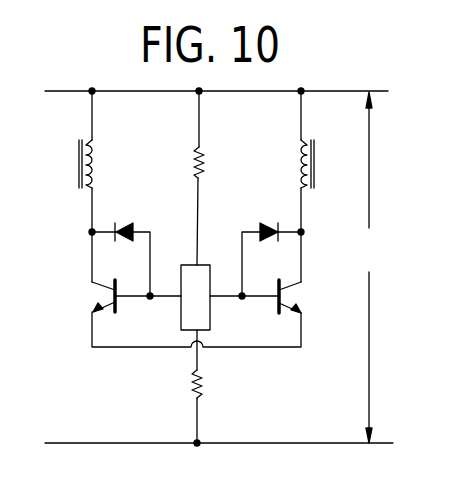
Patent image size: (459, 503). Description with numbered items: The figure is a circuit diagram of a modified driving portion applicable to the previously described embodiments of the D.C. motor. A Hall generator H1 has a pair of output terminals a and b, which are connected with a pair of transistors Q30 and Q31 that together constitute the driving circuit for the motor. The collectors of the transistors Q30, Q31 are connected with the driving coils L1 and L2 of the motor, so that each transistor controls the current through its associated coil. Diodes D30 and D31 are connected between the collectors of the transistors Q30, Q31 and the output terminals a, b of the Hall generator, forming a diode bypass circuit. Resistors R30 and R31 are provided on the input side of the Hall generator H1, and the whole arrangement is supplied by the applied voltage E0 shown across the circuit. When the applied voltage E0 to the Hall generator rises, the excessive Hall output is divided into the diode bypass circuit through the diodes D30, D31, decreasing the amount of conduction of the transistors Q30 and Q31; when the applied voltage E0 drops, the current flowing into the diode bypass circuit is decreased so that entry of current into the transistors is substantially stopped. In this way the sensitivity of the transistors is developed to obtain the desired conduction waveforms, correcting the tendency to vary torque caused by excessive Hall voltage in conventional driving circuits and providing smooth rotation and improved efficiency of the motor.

The driving coil L1 is at (78, 168).
The driving coil L2 is at (318, 150).
The resistor R30 is at (203, 158).
The resistor R31 is at (205, 386).
The diode D30 is at (125, 222).
The diode D31 is at (268, 222).
The transistor Q30 is at (110, 295).
The transistor Q31 is at (298, 297).
The Hall generator H1 is at (206, 263).
The output terminal a is at (150, 300).
The output terminal b is at (242, 300).
The applied voltage E0 is at (370, 267).